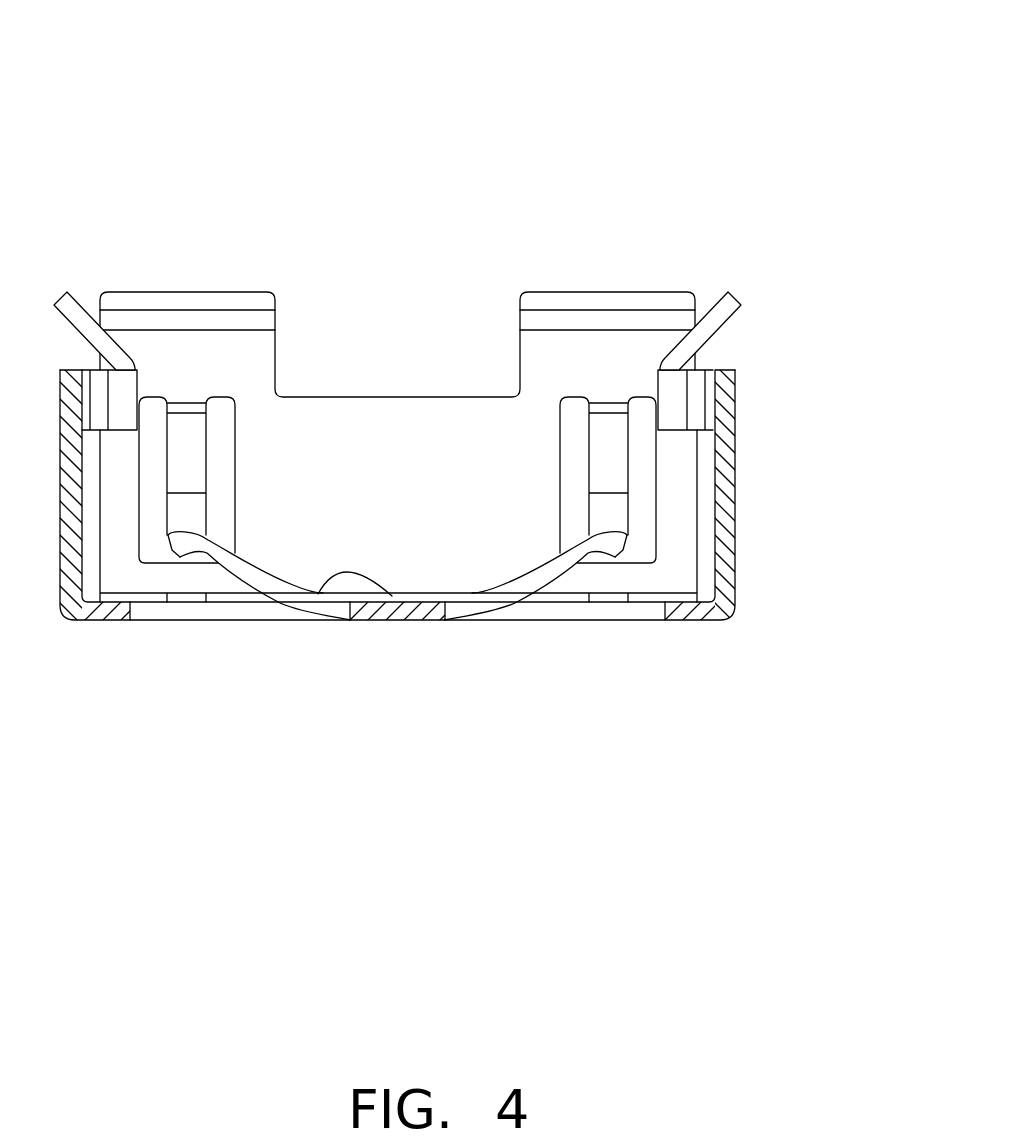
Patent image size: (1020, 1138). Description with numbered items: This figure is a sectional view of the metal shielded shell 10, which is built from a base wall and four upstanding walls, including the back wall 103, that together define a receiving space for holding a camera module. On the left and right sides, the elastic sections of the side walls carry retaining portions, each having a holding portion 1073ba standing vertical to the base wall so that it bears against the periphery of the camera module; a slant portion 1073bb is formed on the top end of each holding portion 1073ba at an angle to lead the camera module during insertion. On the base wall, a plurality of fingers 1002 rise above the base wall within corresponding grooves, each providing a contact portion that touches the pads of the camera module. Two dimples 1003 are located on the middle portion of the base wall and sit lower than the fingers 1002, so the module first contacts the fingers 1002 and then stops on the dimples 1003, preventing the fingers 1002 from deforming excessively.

The shielded shell 10 is at (439, 46).
The back wall 103 is at (376, 433).
The holding portion 1073ba is at (677, 400).
The slant portion 1073bb is at (713, 318).
The finger 1002 is at (200, 542).
The dimple 1003 is at (343, 572).